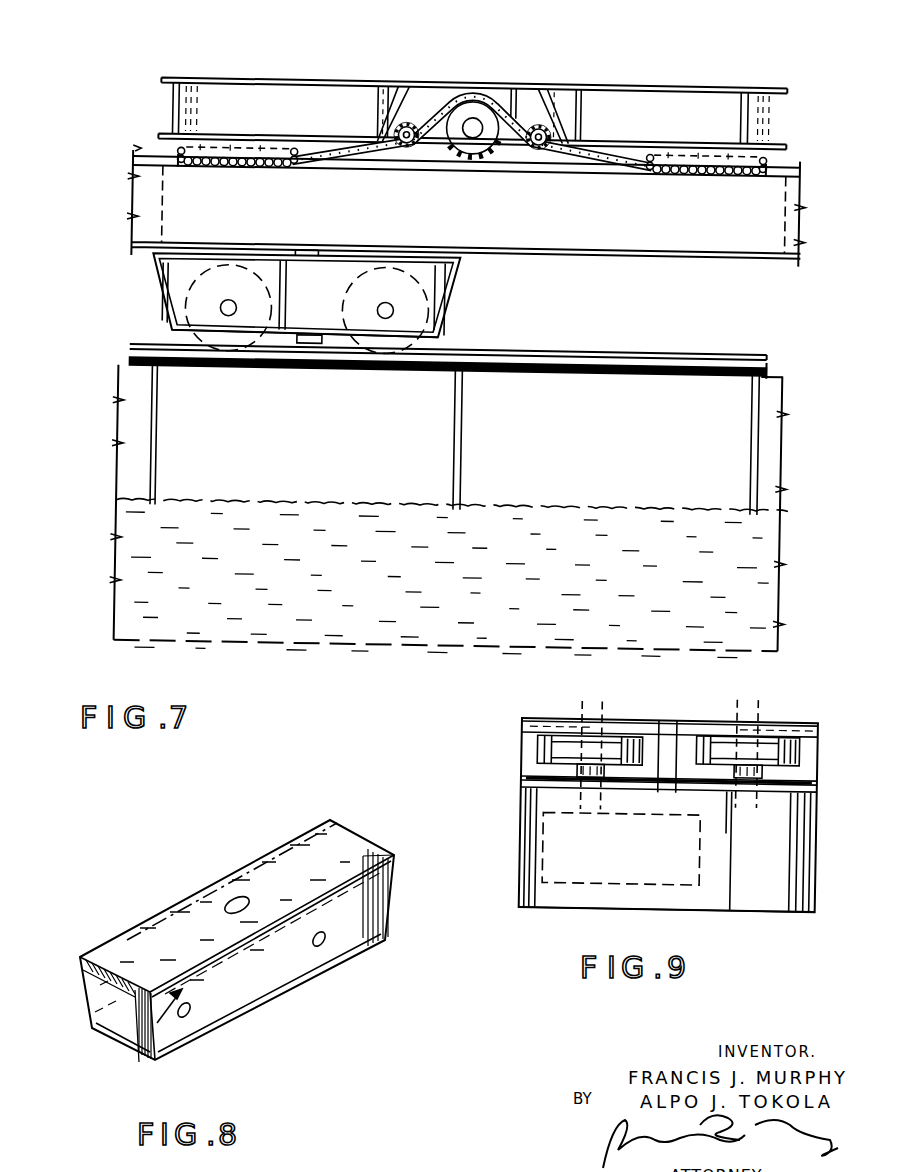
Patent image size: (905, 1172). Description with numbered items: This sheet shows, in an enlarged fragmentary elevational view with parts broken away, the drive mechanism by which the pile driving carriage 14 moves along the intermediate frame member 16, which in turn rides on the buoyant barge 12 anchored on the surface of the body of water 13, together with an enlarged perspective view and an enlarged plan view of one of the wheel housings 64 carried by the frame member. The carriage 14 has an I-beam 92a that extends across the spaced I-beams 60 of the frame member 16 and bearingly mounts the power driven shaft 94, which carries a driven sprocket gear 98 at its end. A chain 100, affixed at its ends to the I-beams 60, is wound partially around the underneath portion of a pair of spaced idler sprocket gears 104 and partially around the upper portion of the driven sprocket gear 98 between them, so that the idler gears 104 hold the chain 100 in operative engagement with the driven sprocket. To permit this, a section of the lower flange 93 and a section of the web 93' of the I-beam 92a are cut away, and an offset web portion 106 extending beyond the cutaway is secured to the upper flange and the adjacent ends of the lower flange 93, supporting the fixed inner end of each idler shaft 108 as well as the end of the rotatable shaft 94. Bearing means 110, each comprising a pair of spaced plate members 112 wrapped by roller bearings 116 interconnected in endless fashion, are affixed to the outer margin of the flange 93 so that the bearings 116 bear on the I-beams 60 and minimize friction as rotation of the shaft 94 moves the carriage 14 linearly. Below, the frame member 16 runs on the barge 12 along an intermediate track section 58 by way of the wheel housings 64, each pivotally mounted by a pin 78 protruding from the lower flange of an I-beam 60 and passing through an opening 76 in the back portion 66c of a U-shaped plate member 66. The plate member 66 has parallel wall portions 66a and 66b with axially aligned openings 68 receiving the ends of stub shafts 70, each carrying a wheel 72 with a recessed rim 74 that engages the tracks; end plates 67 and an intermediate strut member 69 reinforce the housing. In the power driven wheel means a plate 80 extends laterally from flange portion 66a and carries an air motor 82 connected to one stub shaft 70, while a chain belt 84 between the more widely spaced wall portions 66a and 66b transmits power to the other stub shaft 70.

In FIG. 7, the buoyant barge 12 is at (618, 459).
In FIG. 7, the body of water 13 is at (833, 593).
In FIG. 7, the pile driving carriage 14 is at (761, 72).
In FIG. 7, the intermediate frame member 16 is at (734, 217).
In FIG. 7, the intermediate track section 58 is at (633, 341).
In FIG. 7, the I-beam 60 is at (254, 210).
In FIG. 7, the wheel housing 64 is at (337, 299).
In FIG. 9, the wheel housing 64 is at (562, 717).
In FIG. 7, the plate member 66 is at (437, 287).
In FIG. 8, the plate member 66 is at (147, 1023).
In FIG. 8, the flange portion 66a is at (100, 1003).
In FIG. 9, the flange portion 66a is at (553, 778).
In FIG. 7, the wall portion 66b is at (303, 319).
In FIG. 8, the wall portion 66b is at (262, 970).
In FIG. 9, the wall portion 66b is at (537, 722).
In FIG. 8, the back portion 66c is at (347, 852).
In FIG. 7, the end plate 67 is at (170, 279).
In FIG. 8, the end plate 67 is at (387, 860).
In FIG. 9, the end plate 67 is at (523, 755).
In FIG. 8, the opening 68 is at (325, 940).
In FIG. 7, the intermediate strut member 69 is at (321, 337).
In FIG. 9, the intermediate strut member 69 is at (682, 730).
In FIG. 7, the stub shaft 70 is at (225, 310).
In FIG. 9, the stub shaft 70 is at (582, 716).
In FIG. 7, the wheel 72 is at (196, 342).
In FIG. 9, the wheel 72 is at (567, 753).
In FIG. 9, the recessed rim 74 is at (624, 735).
In FIG. 8, the opening 76 is at (240, 895).
In FIG. 7, the pin 78 is at (325, 247).
In FIG. 9, the plate 80 is at (780, 895).
In FIG. 9, the air motor 82 is at (621, 848).
In FIG. 9, the chain belt 84 is at (728, 773).
In FIG. 7, the I-beam 92a is at (699, 108).
In FIG. 7, the lower flange 93 is at (564, 88).
In FIG. 7, the web 93' is at (492, 86).
In FIG. 7, the power driven shaft 94 is at (476, 126).
In FIG. 7, the driven sprocket gear 98 is at (463, 150).
In FIG. 7, the chain 100 is at (575, 154).
In FIG. 7, the idler sprocket gear 104 is at (410, 118).
In FIG. 7, the offset web portion 106 is at (511, 93).
In FIG. 7, the idler shaft 108 is at (403, 141).
In FIG. 7, the bearing means 110 is at (230, 146).
In FIG. 7, the plate member 112 is at (252, 141).
In FIG. 7, the roller bearing 116 is at (200, 161).